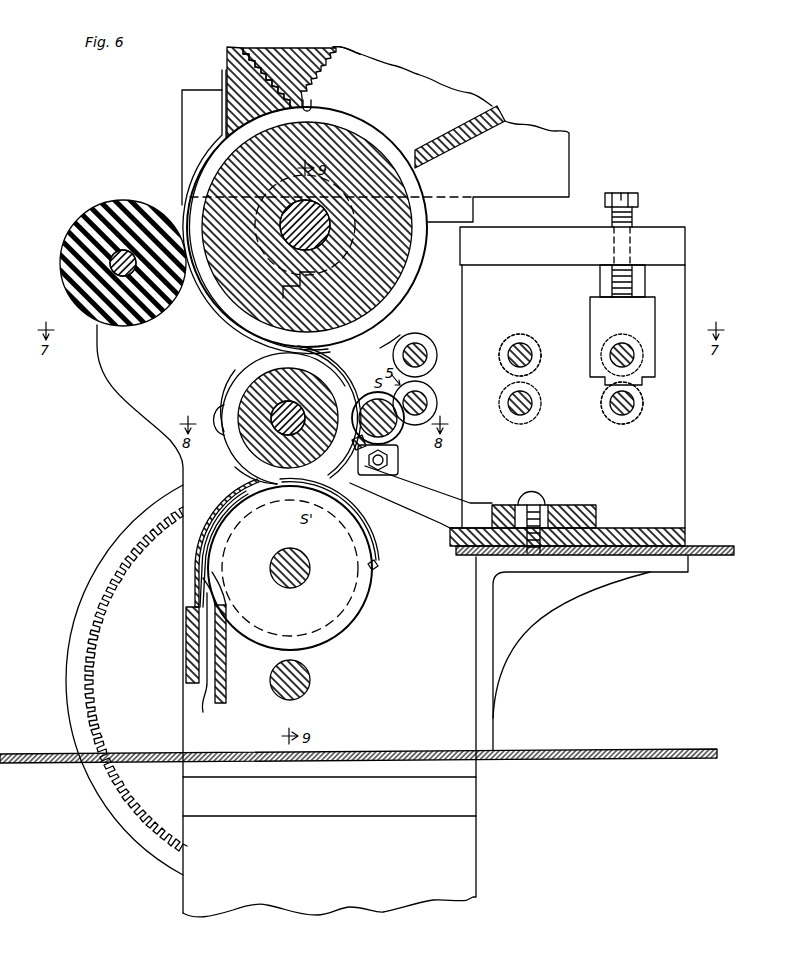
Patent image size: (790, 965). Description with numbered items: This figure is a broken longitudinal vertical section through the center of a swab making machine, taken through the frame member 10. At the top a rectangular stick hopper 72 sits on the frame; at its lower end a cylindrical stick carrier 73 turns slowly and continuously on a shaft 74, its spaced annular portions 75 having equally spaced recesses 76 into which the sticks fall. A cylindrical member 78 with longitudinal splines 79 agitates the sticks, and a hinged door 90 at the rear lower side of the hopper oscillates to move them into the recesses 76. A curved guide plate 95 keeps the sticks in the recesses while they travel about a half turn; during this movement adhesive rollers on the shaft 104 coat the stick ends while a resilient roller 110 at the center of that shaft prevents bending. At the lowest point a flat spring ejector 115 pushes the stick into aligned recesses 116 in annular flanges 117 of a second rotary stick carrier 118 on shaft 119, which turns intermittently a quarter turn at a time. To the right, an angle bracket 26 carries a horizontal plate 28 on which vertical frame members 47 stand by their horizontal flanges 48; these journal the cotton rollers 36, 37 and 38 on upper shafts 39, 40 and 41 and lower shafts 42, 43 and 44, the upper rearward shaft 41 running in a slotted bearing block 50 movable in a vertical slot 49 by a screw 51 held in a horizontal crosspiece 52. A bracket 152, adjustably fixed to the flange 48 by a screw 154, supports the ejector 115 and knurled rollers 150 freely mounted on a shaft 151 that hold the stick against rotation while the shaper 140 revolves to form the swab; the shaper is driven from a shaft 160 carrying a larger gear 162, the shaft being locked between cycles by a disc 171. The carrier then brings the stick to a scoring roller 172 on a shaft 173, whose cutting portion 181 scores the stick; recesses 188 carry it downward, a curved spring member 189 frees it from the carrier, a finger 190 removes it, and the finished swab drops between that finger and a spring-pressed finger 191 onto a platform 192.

The vertical frame member 10 is at (383, 340).
The angle bracket 26 is at (492, 712).
The horizontal plate 28 is at (706, 546).
The forward rollers 36 is at (420, 343).
The rearward rollers 37 is at (542, 374).
The rearward rollers 38 is at (645, 387).
The shaft 39 is at (425, 355).
The shaft 40 is at (522, 348).
The upper rearward shaft 41 is at (638, 355).
The shaft 42 is at (425, 403).
The shaft 43 is at (524, 412).
The shaft 44 is at (628, 414).
The vertical frame members 47 is at (675, 450).
The horizontal flanges 48 is at (690, 530).
The vertical slot 49 is at (646, 290).
The slotted bearing block 50 is at (650, 326).
The screw 51 is at (636, 224).
The horizontal crosspiece 52 is at (684, 242).
The hopper 72 is at (227, 58).
The cylindrical stick carrier 73 is at (355, 132).
The shaft 74 is at (323, 213).
The annular portions 75 is at (398, 138).
The recesses 76 is at (316, 102).
The cylindrical member 78 is at (290, 50).
The longitudinal splines 79 is at (340, 55).
The hinged door 90 is at (462, 150).
The curved guide plate 95 is at (185, 212).
The shaft 104 is at (120, 200).
The resilient roller 110 is at (62, 262).
The ejector 115 is at (332, 376).
The recesses 116 is at (222, 412).
The annular flanges 117 is at (236, 446).
The second rotary stick carrier 118 is at (268, 452).
The shaft 119 is at (262, 388).
The shaper 140 is at (402, 346).
The knurled rollers 150 is at (400, 458).
The shaft 151 is at (372, 428).
The bracket 152 is at (442, 518).
The screw 154 is at (536, 498).
The shaft 160 is at (312, 684).
The larger gear 162 is at (130, 568).
The disc 171 is at (85, 612).
The scoring roller 172 is at (379, 613).
The shaft 173 is at (304, 572).
The cutting portion 181 is at (338, 500).
The recesses 188 is at (378, 566).
The curved spring member 189 is at (232, 507).
The finger 190 is at (227, 674).
The spring-pressed finger 191 is at (213, 660).
The platform 192 is at (270, 754).